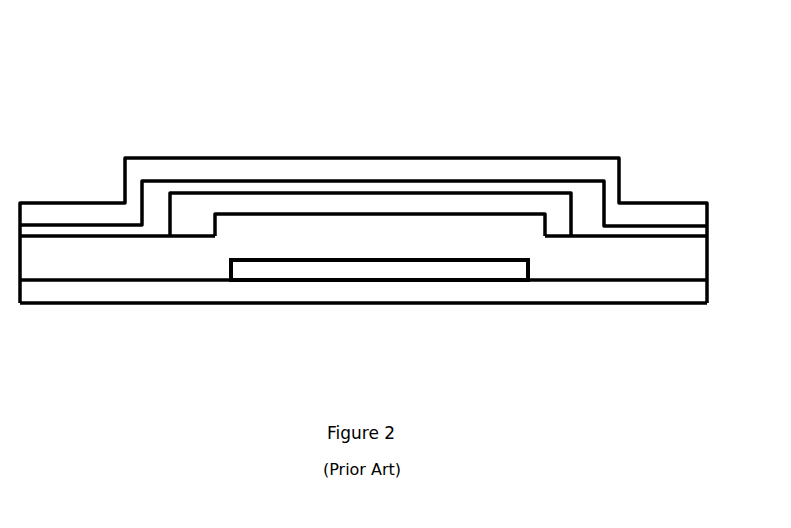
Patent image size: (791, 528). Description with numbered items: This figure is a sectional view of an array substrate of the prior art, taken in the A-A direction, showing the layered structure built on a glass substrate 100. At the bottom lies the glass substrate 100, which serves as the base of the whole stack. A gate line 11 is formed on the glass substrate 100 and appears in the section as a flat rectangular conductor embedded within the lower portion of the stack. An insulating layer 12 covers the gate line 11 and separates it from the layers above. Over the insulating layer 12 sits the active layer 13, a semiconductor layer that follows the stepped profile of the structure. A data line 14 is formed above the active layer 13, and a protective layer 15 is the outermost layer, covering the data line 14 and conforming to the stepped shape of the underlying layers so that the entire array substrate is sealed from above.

The gate line 11 is at (365, 260).
The insulating layer 12 is at (180, 263).
The active layer 13 is at (320, 205).
The data line 14 is at (157, 192).
The protective layer 15 is at (485, 173).
The glass substrate 100 is at (645, 292).